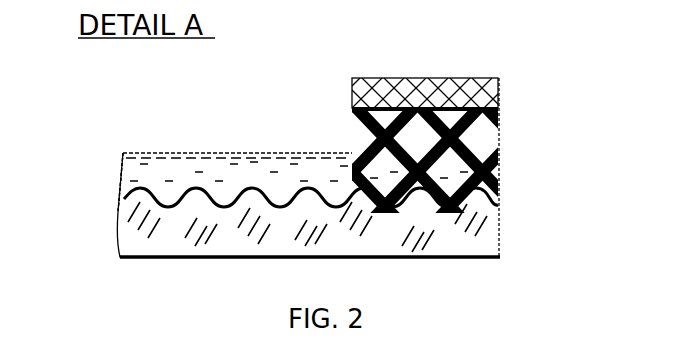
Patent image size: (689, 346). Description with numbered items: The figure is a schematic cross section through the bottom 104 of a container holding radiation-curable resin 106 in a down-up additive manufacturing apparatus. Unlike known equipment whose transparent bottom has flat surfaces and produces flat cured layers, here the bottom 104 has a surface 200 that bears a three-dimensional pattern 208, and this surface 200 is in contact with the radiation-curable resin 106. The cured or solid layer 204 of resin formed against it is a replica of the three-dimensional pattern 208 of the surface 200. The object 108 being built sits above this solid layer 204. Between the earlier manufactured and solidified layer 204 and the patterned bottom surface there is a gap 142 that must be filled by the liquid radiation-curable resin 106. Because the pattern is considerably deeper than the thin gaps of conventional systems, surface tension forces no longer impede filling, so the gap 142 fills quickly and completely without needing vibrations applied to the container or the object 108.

The surface 200 is at (142, 200).
The 3D pattern 208 is at (187, 137).
The radiation-curable resin 106 is at (246, 166).
The bottom 104 is at (143, 245).
The object 108 is at (437, 78).
The gap 142 is at (502, 172).
The solid layer 204 is at (477, 200).